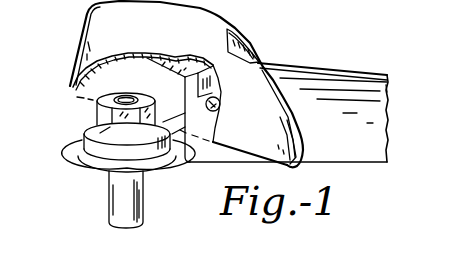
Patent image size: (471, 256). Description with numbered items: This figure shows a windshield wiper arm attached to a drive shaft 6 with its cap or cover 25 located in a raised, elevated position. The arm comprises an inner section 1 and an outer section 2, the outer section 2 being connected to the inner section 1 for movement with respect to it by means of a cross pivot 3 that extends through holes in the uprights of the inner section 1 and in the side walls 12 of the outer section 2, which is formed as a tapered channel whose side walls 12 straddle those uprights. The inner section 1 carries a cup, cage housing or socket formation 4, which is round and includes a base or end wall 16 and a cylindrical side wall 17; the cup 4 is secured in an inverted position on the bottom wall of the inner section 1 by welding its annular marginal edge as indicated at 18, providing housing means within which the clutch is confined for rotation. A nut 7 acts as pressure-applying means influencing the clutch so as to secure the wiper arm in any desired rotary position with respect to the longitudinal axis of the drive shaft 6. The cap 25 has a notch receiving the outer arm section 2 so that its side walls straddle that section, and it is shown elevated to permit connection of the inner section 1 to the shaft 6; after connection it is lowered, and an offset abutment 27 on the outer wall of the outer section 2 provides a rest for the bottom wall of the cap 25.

The inner section of a windshield wiper arm 1 is at (165, 160).
The outer section of the arm 2 is at (393, 84).
The cross pivot 3 is at (222, 102).
The cup, cage housing or socket formation 4 is at (96, 137).
The drive shaft 6 is at (103, 202).
The nut 7 is at (98, 120).
The side walls 12 is at (377, 142).
The base or end wall 16 is at (100, 151).
The cylindrical side wall 17 is at (83, 159).
The welding 18 is at (164, 252).
The cap or cover 25 is at (113, 27).
The offset abutment 27 is at (192, 87).